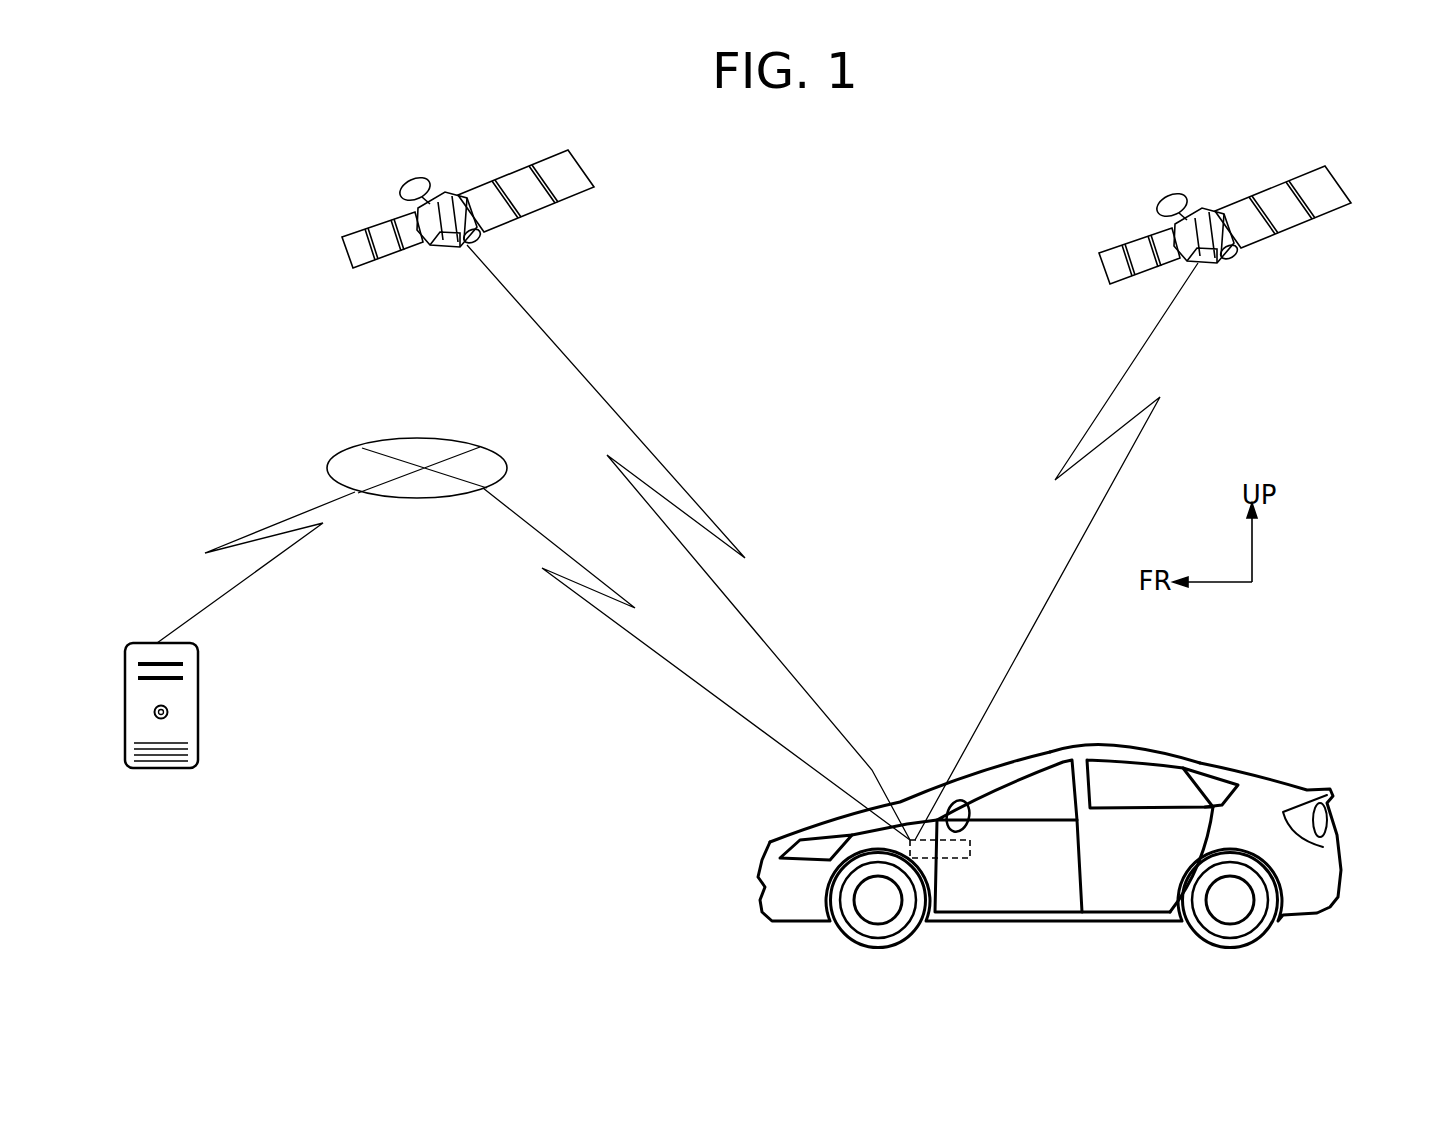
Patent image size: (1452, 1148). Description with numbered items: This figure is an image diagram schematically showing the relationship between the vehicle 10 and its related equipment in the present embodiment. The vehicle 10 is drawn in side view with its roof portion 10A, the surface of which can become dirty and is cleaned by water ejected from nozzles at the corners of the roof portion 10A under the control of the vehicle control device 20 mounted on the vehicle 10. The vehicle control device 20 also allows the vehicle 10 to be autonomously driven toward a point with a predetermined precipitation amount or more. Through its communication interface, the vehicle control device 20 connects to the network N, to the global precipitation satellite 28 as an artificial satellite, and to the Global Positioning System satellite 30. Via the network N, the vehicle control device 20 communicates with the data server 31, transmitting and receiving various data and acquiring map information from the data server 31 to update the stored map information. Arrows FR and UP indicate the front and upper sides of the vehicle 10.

The vehicle 10 is at (1253, 762).
The roof portion 10A is at (1110, 748).
The vehicle control device 20 is at (972, 848).
The global precipitation satellite 28 is at (568, 170).
The Global Positioning System (GPS) satellite 30 is at (1318, 197).
The data server 31 is at (192, 700).
The network N is at (428, 434).